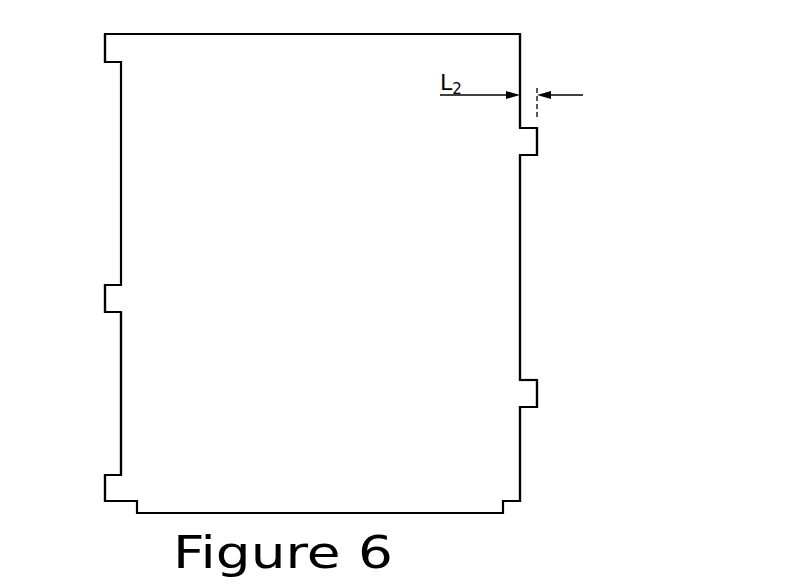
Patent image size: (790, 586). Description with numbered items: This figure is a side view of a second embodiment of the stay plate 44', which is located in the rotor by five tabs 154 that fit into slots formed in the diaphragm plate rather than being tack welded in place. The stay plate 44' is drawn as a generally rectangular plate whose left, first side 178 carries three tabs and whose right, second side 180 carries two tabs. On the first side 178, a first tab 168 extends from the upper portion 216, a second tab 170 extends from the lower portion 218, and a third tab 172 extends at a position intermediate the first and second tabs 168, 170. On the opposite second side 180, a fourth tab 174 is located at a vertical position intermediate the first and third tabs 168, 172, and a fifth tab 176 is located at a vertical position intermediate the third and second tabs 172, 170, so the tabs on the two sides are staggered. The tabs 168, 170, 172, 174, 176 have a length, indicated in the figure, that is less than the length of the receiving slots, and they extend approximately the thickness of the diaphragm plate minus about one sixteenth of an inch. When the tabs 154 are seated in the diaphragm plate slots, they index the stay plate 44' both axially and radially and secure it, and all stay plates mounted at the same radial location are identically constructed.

The stay plate 44' is at (429, 273).
The first tab 168 is at (117, 46).
The third tab 172 is at (120, 300).
The first side 178 is at (121, 410).
The second tab 170 is at (120, 487).
The upper portion 216 is at (507, 55).
The fourth tab 174 is at (525, 143).
The second side 180 is at (521, 244).
The tabs 154 is at (537, 383).
The fifth tab 176 is at (525, 392).
The lower portion 218 is at (507, 470).